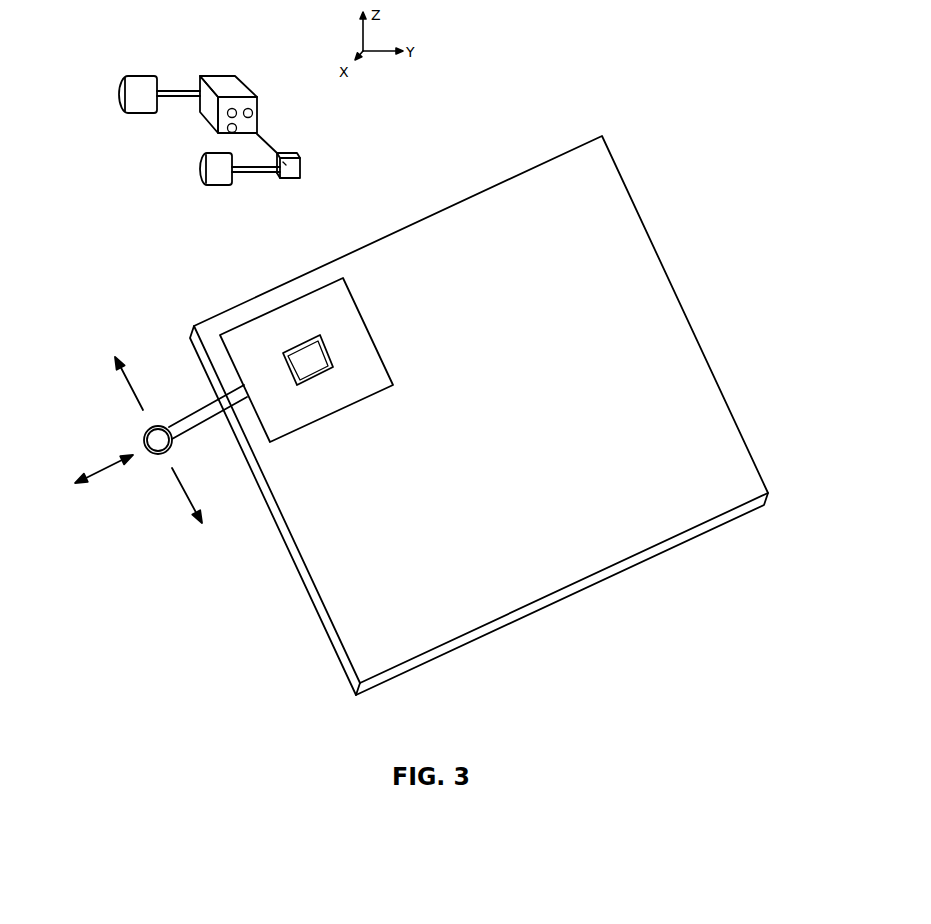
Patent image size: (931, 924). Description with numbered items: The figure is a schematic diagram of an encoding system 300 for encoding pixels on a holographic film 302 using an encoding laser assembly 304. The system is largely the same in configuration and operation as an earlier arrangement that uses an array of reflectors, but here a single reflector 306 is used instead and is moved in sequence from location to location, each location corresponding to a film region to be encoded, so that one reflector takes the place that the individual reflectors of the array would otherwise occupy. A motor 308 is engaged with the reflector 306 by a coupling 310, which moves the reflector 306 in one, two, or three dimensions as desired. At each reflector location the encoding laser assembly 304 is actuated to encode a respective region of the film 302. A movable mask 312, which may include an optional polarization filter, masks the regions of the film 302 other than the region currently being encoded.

The encoding system 300 is at (423, 390).
The holographic film 302 is at (678, 355).
The encoding laser assembly 304 is at (224, 156).
The reflector 306 is at (301, 170).
The motor 308 is at (213, 188).
The coupling 310 is at (254, 175).
The movable mask 312 is at (363, 352).